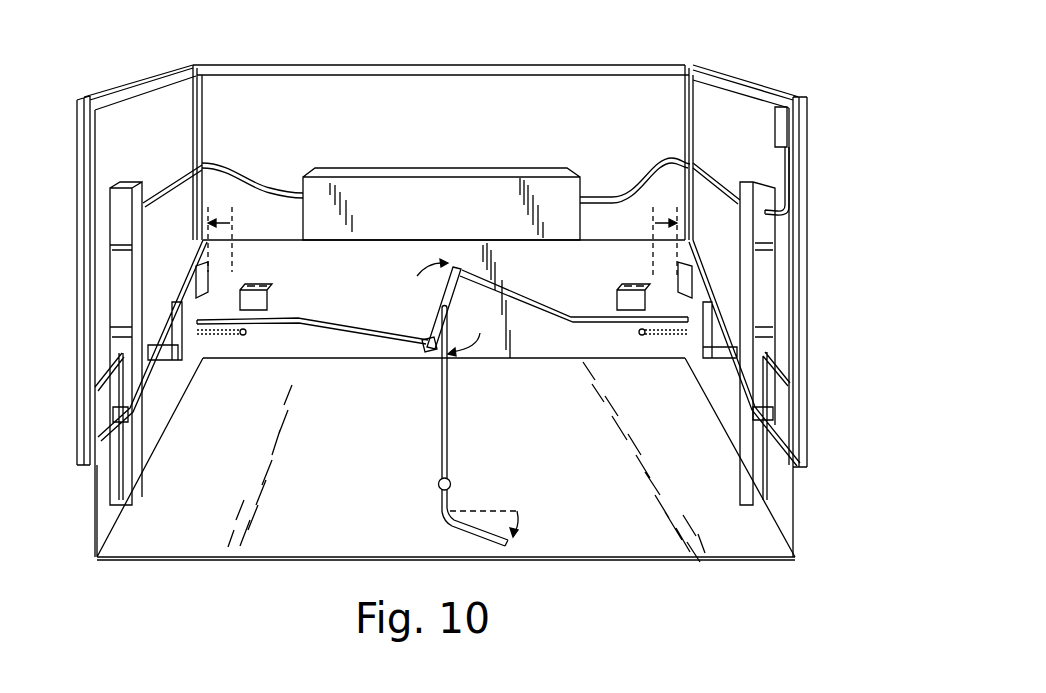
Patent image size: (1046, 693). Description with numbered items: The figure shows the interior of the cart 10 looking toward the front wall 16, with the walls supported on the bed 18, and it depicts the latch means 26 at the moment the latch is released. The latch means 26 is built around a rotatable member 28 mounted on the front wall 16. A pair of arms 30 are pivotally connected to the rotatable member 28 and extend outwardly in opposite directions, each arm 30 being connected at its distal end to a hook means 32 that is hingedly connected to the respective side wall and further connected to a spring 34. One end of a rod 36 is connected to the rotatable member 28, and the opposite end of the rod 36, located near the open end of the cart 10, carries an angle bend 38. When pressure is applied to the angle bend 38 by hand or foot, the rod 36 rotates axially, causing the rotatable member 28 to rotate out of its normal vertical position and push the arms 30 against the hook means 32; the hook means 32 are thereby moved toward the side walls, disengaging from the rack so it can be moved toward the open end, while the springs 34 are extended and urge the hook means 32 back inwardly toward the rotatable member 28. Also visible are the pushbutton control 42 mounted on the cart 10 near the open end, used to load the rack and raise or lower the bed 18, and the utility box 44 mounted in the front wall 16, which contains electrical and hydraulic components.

The cart 10 is at (789, 66).
The front wall 16 is at (243, 258).
The bed 18 is at (142, 540).
The latch means 26 is at (433, 322).
The rotatable member 28 is at (437, 312).
The arms 30 is at (330, 322).
The hook means 32 is at (203, 268).
The spring 34 is at (223, 336).
The rod 36 is at (447, 397).
The angle bend 38 is at (495, 543).
The pushbutton control 42 is at (785, 125).
The utility box 44 is at (468, 200).